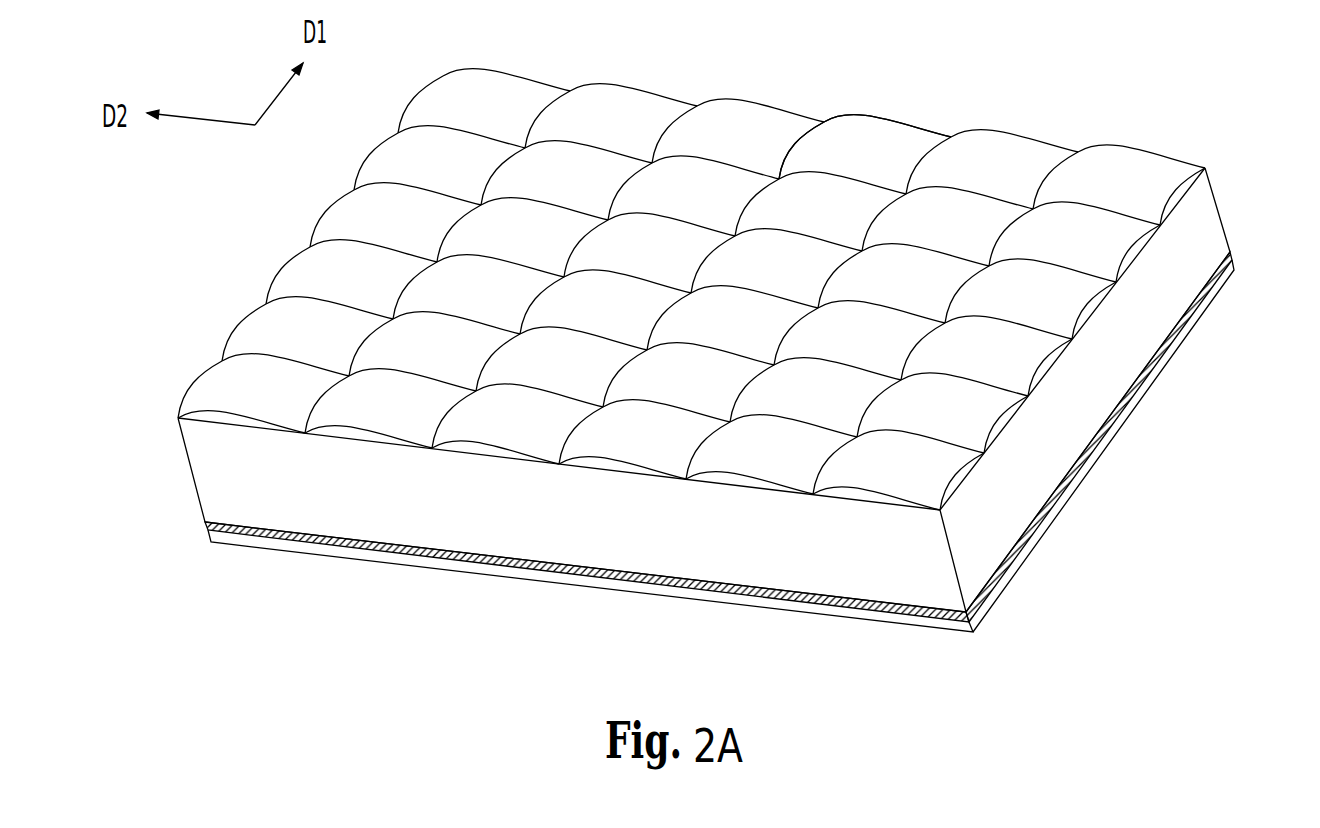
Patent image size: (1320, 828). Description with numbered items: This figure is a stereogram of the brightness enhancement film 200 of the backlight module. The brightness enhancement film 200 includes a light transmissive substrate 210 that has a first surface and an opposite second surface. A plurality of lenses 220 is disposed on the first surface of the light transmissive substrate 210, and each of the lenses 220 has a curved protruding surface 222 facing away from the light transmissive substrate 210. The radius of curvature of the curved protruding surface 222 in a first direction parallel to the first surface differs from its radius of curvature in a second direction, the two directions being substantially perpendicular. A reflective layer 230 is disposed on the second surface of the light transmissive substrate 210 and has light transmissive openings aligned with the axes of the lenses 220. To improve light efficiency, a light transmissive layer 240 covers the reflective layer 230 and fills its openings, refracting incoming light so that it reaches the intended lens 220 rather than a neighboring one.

The brightness enhancement film 200 is at (732, 376).
The light transmissive substrate 210 is at (1198, 238).
The lenses 220 is at (1002, 155).
The curved protruding surface 222 is at (866, 150).
The reflective layer 230 is at (837, 603).
The light transmissive layer 240 is at (912, 623).